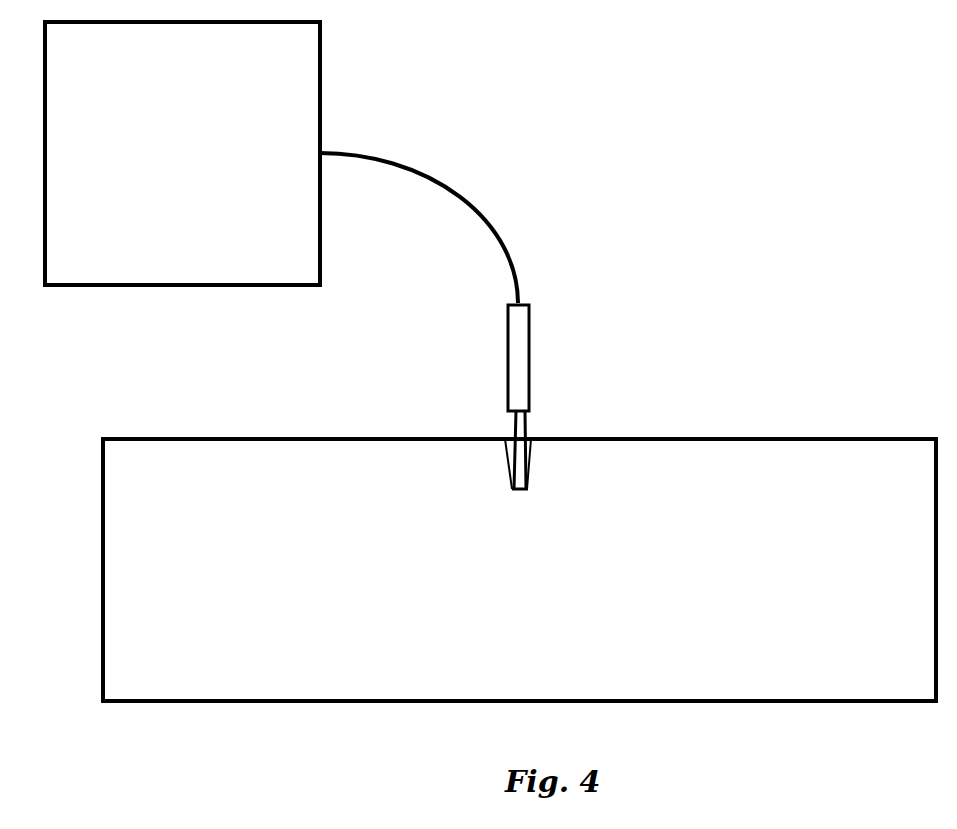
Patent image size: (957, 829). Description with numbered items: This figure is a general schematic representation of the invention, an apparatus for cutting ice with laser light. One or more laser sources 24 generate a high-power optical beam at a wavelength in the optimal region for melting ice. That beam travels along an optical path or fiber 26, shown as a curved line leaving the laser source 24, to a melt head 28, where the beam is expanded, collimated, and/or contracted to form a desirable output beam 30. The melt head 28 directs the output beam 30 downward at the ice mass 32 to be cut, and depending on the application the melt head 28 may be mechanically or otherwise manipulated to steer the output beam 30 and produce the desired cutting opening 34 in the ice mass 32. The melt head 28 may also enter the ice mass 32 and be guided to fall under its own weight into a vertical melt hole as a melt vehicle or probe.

The laser source 24 is at (191, 156).
The optical path or fiber 26 is at (452, 193).
The melt head 28 is at (530, 353).
The output beam 30 is at (522, 428).
The ice mass 32 is at (534, 578).
The cutting opening 34 is at (512, 467).